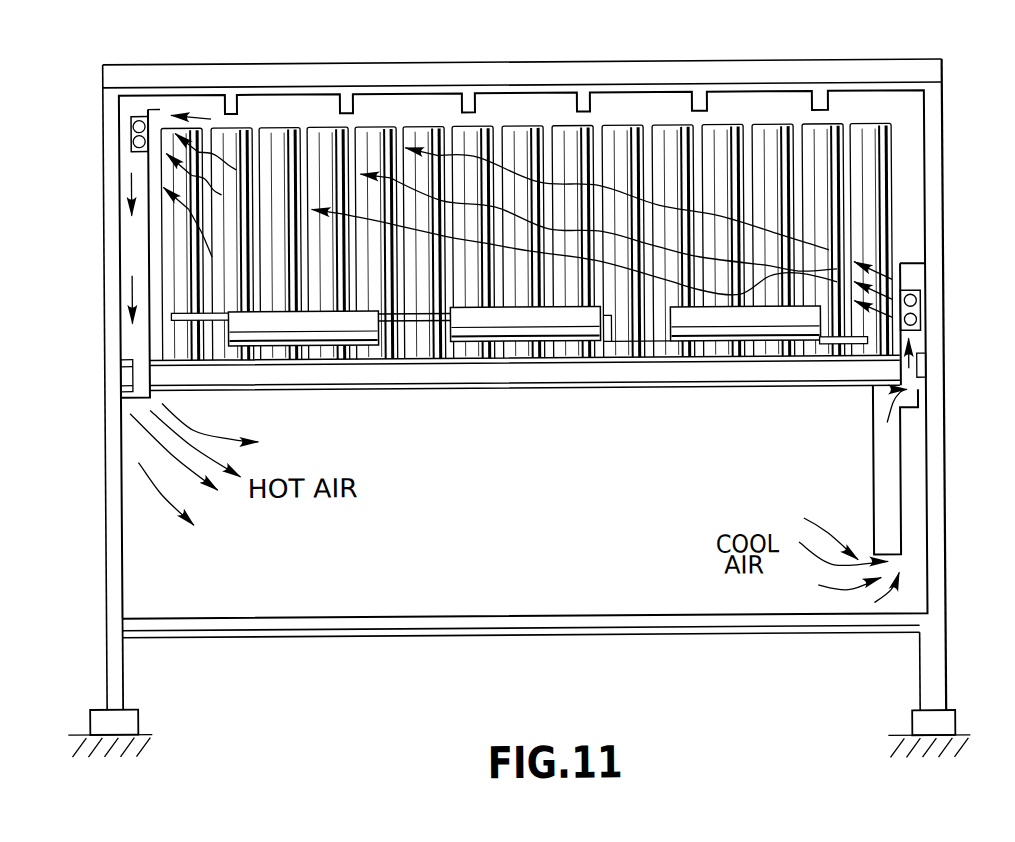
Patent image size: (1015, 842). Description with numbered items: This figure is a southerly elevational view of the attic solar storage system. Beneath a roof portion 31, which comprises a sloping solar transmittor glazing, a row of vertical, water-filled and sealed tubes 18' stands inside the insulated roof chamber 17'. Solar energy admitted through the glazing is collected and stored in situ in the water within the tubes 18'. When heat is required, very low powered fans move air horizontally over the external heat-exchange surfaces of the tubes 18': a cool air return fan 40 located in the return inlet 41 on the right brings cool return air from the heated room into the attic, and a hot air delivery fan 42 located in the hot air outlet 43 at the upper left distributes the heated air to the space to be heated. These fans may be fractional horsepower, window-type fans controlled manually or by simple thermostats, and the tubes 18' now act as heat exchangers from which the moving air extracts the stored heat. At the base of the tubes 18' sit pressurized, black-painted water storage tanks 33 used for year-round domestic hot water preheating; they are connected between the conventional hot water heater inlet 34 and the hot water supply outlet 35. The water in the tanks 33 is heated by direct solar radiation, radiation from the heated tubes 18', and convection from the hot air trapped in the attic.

The insulated roof chamber 17' is at (522, 322).
The tubes 18' is at (521, 190).
The roof portion 31 is at (520, 68).
The water storage tanks 33 is at (284, 343).
The hot water heater inlet 34 is at (821, 346).
The hot water supply outlet 35 is at (180, 318).
The cool air return fan 40 is at (921, 311).
The return inlet 41 is at (900, 515).
The hot air delivery fan 42 is at (133, 131).
The hot air outlet 43 is at (140, 387).